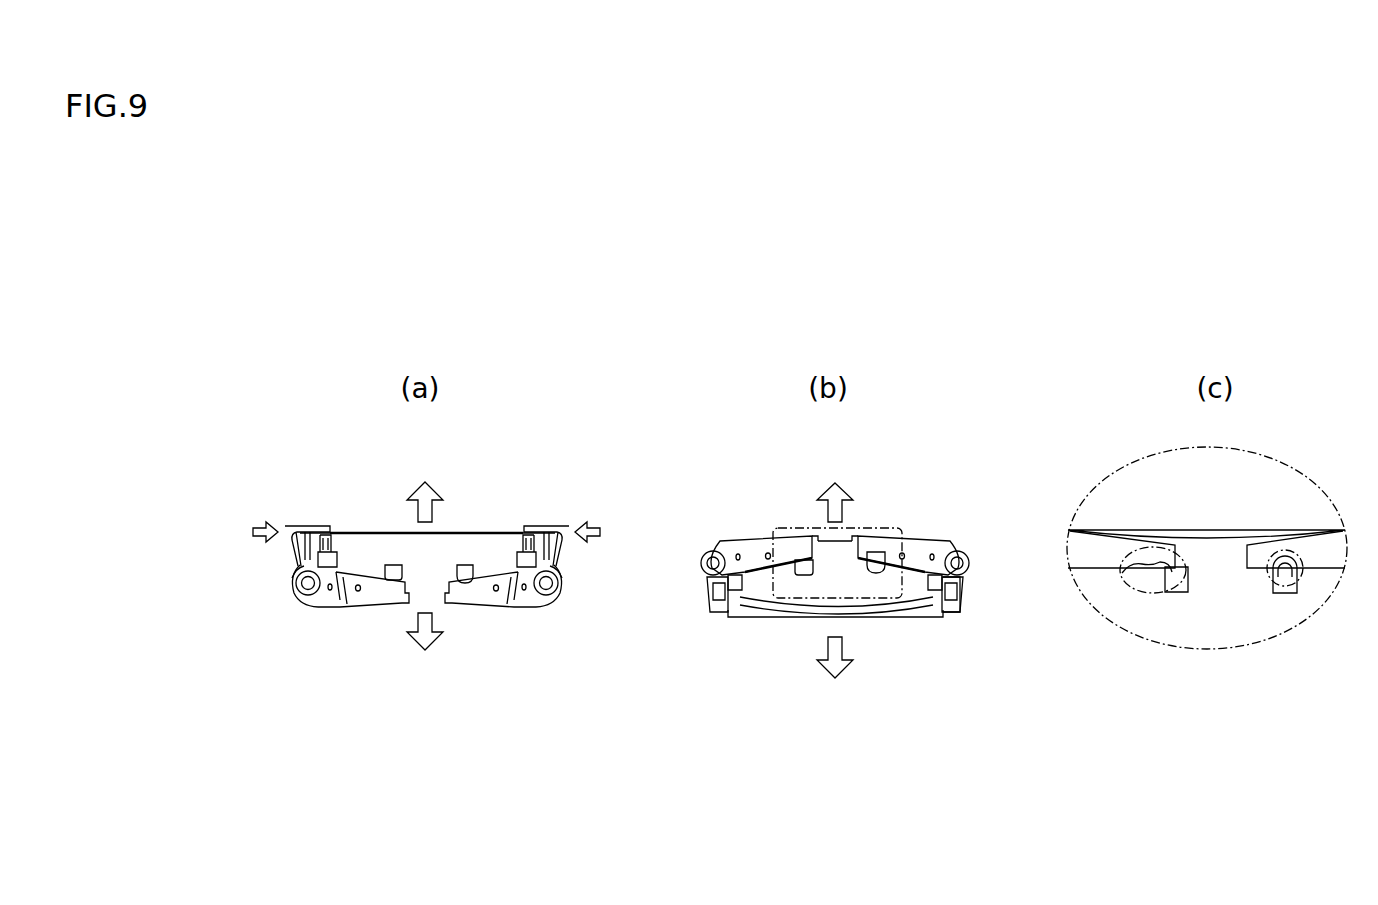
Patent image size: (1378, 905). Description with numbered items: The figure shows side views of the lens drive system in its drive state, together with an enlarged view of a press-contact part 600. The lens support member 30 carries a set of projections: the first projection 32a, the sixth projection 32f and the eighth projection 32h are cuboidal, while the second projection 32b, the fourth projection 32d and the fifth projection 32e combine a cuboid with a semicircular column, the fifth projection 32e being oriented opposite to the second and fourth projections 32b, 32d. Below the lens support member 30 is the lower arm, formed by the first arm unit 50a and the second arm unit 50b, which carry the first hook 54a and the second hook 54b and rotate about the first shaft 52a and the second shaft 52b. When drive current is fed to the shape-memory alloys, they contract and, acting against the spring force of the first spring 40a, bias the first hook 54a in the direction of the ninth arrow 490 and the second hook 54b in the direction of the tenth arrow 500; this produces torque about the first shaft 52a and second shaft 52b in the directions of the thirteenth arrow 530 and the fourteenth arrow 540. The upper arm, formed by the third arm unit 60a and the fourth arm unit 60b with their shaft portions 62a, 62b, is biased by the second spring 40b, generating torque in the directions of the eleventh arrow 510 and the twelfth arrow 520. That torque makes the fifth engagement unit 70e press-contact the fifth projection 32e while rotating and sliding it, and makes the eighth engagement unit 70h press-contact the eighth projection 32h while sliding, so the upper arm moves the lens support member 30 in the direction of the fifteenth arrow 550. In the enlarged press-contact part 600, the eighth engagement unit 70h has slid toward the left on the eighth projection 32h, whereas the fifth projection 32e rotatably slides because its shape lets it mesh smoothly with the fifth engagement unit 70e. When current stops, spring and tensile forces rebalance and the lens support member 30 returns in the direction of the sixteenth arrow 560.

The lens support member 30 is at (358, 538).
The first projection 32a is at (393, 565).
The second projection 32b is at (740, 590).
The fourth projection 32d is at (466, 565).
The fifth projection 32e is at (352, 590).
The sixth projection 32f is at (520, 590).
The eighth projection 32h is at (805, 576).
The first spring 40a is at (324, 545).
The second spring 40b is at (935, 605).
The first arm unit 50a is at (325, 606).
The second arm unit 50b is at (540, 606).
The first shaft 52a is at (300, 585).
The second shaft 52b is at (556, 585).
The first hook 54a is at (300, 530).
The second hook 54b is at (555, 528).
The third arm unit 60a is at (936, 546).
The fourth arm unit 60b is at (737, 546).
The shaft portion 62a is at (962, 563).
The shaft portion 62b is at (710, 563).
The fifth engagement unit 70e is at (1275, 582).
The eighth engagement unit 70h is at (1140, 592).
The ninth arrow 490 is at (250, 522).
The tenth arrow 500 is at (590, 522).
The eleventh arrow 510 is at (950, 550).
The twelfth arrow 520 is at (702, 566).
The thirteenth arrow 530 is at (300, 583).
The fourteenth arrow 540 is at (560, 583).
The fifteenth arrow 550 is at (435, 634).
The sixteenth arrow 560 is at (443, 500).
The press-contact part 600 is at (800, 528).